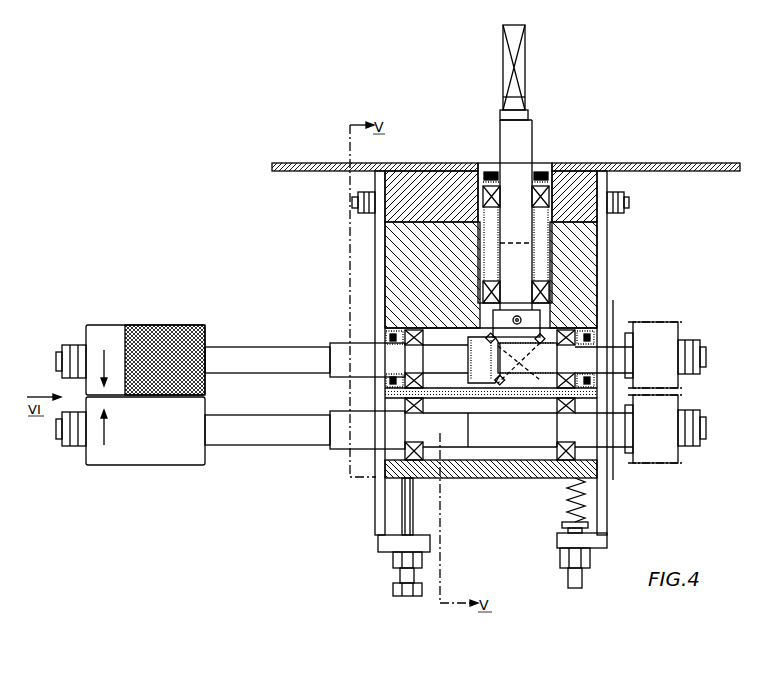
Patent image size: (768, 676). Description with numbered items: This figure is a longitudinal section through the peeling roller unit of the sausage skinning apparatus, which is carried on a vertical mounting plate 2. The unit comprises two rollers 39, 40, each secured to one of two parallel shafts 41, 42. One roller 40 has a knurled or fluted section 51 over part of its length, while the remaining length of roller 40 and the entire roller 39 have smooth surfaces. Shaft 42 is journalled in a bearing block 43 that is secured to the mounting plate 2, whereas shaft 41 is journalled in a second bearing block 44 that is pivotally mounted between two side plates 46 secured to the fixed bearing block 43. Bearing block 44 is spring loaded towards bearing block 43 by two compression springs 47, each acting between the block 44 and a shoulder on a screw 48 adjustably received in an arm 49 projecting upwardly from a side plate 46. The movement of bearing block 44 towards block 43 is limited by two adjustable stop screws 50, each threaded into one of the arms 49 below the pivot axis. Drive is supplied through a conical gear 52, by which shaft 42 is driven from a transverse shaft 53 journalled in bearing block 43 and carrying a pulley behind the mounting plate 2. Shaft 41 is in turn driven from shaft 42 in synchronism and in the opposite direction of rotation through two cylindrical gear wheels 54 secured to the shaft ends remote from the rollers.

The mounting plate 2 is at (675, 165).
The roller 39 is at (133, 458).
The roller 40 is at (130, 348).
The shaft 41 is at (285, 438).
The shaft 42 is at (285, 367).
The bearing block 43 is at (594, 256).
The bearing block 44 is at (495, 473).
The side plates 46 is at (381, 510).
The compression springs 47 is at (568, 491).
The screw 48 is at (567, 573).
The arm 49 is at (428, 542).
The adjustable stop screws 50 is at (410, 494).
The knurled or fluted section 51 is at (183, 325).
The conical gear 52 is at (505, 390).
The transverse shaft 53 is at (527, 138).
The cylindrical gear wheels 54 is at (673, 328).